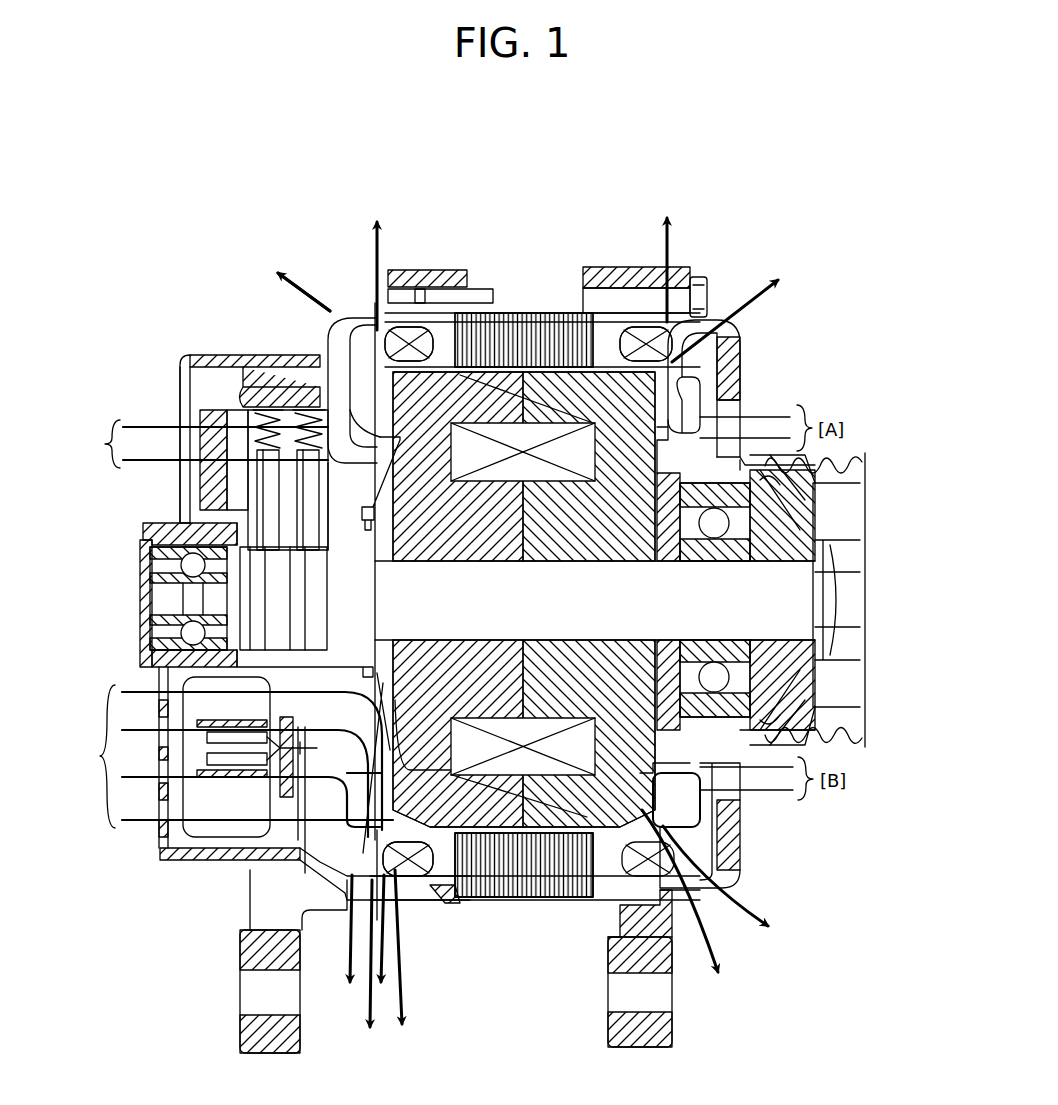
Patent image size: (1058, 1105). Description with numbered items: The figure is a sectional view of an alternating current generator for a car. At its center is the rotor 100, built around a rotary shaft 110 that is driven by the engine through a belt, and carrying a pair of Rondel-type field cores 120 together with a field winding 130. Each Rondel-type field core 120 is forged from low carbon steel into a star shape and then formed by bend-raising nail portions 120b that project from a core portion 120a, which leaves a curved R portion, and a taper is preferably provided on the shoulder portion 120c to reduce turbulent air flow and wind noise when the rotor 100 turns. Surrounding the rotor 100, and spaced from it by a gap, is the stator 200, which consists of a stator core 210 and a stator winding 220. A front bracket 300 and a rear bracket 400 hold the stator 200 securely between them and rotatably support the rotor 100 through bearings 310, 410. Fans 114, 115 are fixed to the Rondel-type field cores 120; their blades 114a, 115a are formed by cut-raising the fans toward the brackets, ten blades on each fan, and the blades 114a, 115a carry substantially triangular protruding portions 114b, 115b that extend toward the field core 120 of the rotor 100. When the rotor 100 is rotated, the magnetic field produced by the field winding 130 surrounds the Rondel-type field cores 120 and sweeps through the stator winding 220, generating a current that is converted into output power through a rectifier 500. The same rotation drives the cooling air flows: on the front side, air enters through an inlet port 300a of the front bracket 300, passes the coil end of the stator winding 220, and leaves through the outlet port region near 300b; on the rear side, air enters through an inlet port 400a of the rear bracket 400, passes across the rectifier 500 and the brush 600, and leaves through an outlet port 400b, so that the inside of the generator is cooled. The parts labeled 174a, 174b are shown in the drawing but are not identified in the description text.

The rotor 100 is at (575, 450).
The rotary shaft 110 is at (795, 588).
The fan 114 is at (340, 410).
The blade 114a is at (345, 880).
The protruding portion 114b is at (425, 895).
The fan 115 is at (745, 320).
The blade 115a is at (735, 340).
The protruding portion 115b is at (643, 380).
The Rondel-type field core 120 is at (445, 300).
The core portion 120a is at (600, 340).
The nail portion 120b is at (528, 330).
The shoulder portion 120c is at (412, 328).
The field winding 130 is at (482, 358).
The rear bracket portion 174a is at (362, 410).
The rear bracket portion 174b is at (400, 300).
The stator 200 is at (504, 900).
The stator core 210 is at (520, 877).
The stator winding 220 is at (400, 870).
The front bracket 300 is at (727, 365).
The inlet port 300a is at (700, 400).
The bolt boss 300b is at (712, 300).
The bearing 310 is at (742, 700).
The rear bracket 400 is at (203, 360).
The inlet port 400a is at (185, 413).
The outlet port 400b is at (335, 310).
The bearing 410 is at (168, 636).
The rectifier 500 is at (213, 822).
The brush 600 is at (262, 503).